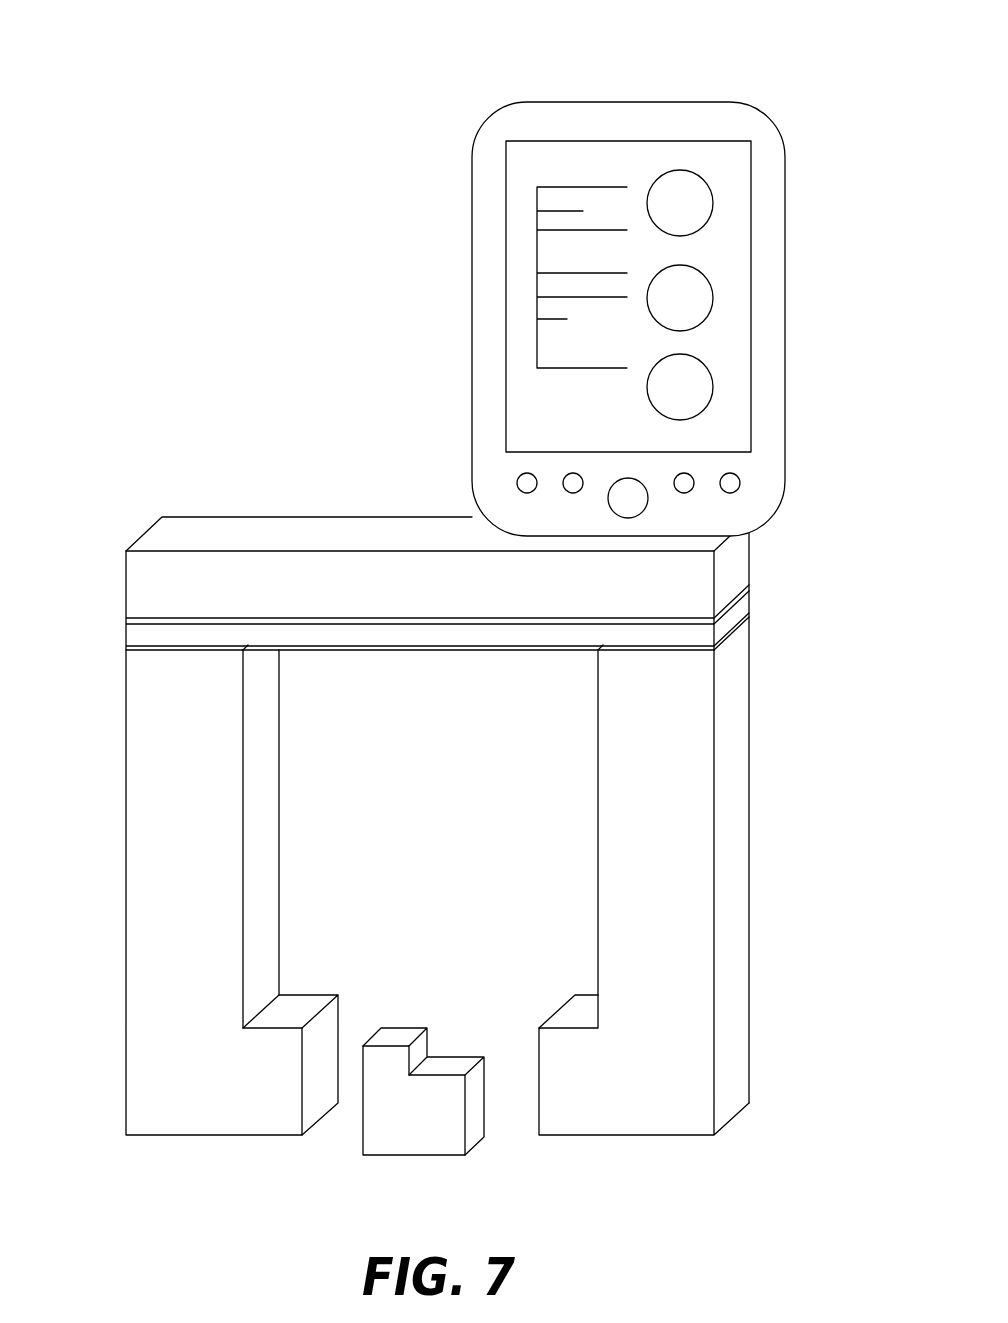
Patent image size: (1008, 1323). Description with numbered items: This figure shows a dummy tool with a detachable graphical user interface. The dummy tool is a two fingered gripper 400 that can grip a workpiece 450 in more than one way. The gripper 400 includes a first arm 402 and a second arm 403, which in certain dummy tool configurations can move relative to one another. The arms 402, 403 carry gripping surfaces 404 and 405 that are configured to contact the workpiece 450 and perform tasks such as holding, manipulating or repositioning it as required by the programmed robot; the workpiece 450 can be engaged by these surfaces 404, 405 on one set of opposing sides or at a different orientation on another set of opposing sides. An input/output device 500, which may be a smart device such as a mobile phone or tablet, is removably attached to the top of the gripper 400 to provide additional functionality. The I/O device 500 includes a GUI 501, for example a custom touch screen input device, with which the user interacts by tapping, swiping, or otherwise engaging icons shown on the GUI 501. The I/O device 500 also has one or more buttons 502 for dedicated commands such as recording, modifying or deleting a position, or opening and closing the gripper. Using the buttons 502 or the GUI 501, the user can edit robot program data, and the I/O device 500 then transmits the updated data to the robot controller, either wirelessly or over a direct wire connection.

The two fingered gripper 400 is at (434, 778).
The first arm 402 is at (152, 822).
The second arm 403 is at (691, 838).
The gripping surface 404 is at (320, 1048).
The gripping surface 405 is at (539, 1073).
The workpiece 450 is at (405, 1108).
The input/output device 500 is at (639, 271).
The graphical user interface 501 is at (543, 168).
The buttons 502 is at (682, 205).